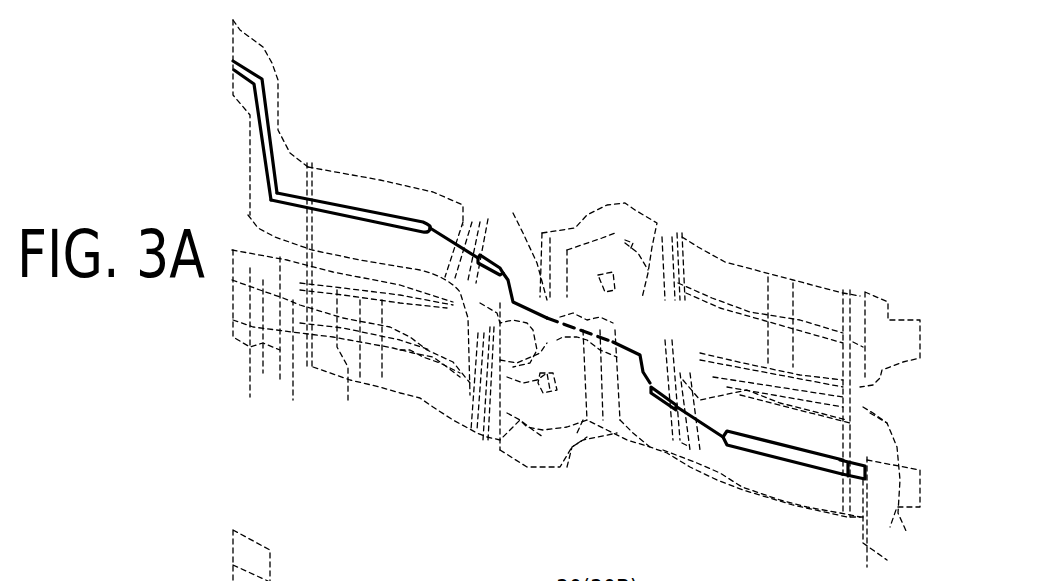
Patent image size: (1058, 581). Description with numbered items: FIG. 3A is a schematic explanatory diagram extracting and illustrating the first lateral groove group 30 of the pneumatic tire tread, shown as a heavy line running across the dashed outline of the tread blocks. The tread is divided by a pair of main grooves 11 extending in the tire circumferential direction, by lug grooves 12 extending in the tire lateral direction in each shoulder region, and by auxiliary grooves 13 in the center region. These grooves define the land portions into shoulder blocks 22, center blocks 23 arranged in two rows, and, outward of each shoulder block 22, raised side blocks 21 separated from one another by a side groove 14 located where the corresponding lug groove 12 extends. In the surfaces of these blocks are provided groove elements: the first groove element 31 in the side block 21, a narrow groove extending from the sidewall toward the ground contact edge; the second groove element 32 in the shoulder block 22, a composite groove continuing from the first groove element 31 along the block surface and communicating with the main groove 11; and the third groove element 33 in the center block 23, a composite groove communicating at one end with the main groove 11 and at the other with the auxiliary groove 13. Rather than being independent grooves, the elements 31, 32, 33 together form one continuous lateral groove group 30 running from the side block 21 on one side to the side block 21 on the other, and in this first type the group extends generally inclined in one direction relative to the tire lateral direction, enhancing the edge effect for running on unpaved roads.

The main groove 11 is at (672, 455).
The lug groove 12 is at (790, 470).
The auxiliary groove 13 is at (606, 448).
The side groove 14 is at (900, 510).
The side block 21 is at (884, 548).
The shoulder block 22 is at (744, 490).
The center block 23 is at (650, 462).
The lateral groove group 30 is at (818, 176).
The first groove element 31 is at (277, 150).
The second groove element 32 is at (387, 222).
The third groove element 33 is at (503, 273).